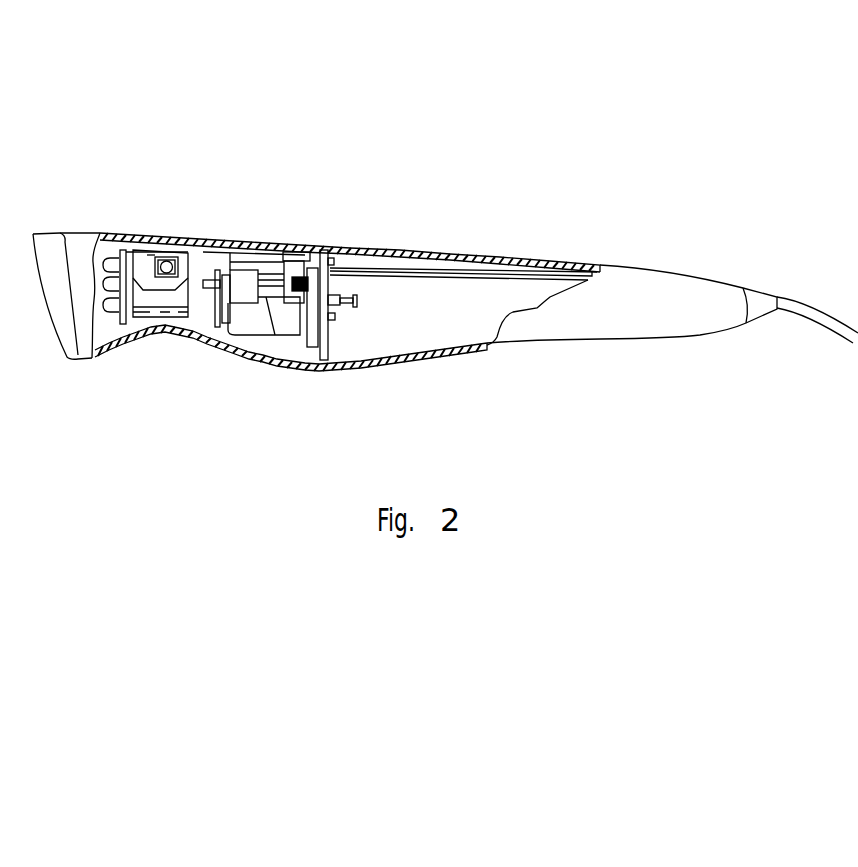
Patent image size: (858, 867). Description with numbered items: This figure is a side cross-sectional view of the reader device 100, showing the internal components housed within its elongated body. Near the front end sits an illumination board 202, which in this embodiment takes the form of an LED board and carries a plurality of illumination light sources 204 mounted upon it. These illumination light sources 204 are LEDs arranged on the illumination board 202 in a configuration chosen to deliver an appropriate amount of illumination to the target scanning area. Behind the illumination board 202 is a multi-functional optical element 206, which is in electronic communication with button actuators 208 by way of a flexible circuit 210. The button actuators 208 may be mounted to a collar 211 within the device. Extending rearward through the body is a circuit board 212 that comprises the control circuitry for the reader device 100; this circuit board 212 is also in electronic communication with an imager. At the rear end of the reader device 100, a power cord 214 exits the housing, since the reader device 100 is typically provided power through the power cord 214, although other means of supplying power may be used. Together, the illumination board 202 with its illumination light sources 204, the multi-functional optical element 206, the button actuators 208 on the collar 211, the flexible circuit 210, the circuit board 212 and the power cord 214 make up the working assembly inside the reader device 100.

The reader device 100 is at (520, 186).
The illumination board 202 is at (143, 320).
The illumination light sources 204 is at (103, 236).
The multi-functional optical element 206 is at (277, 238).
The button actuators 208 is at (138, 238).
The flexible circuit 210 is at (190, 237).
The collar 211 is at (174, 305).
The circuit board 212 is at (392, 274).
The power cord 214 is at (797, 308).